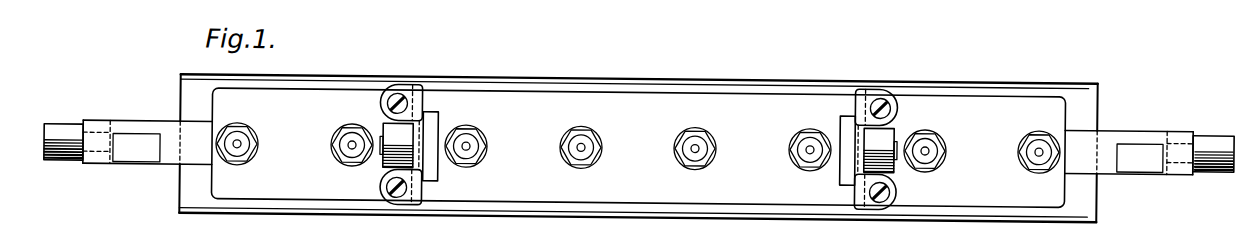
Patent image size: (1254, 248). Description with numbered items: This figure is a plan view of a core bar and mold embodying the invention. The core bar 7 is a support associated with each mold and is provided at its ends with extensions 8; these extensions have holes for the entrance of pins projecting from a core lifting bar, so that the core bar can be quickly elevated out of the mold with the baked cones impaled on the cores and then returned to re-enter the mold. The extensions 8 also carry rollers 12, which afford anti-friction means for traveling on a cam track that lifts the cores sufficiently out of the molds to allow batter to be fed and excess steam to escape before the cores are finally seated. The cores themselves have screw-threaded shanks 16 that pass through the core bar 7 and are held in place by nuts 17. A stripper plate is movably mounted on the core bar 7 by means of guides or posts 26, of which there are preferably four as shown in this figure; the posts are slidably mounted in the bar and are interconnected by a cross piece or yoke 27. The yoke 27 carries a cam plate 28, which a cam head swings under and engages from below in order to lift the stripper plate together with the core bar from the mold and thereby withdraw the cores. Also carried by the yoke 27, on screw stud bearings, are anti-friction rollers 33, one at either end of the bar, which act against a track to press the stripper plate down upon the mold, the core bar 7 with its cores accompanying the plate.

The core bar 7 is at (533, 80).
The extensions 8 is at (147, 126).
The rollers 12 is at (66, 130).
The screw-threaded shanks 16 is at (350, 149).
The nuts 17 is at (333, 142).
The guides or posts 26 is at (407, 189).
The cross piece or yoke 27 is at (423, 95).
The cam plate 28 is at (438, 117).
The anti-friction roller 33 is at (384, 128).